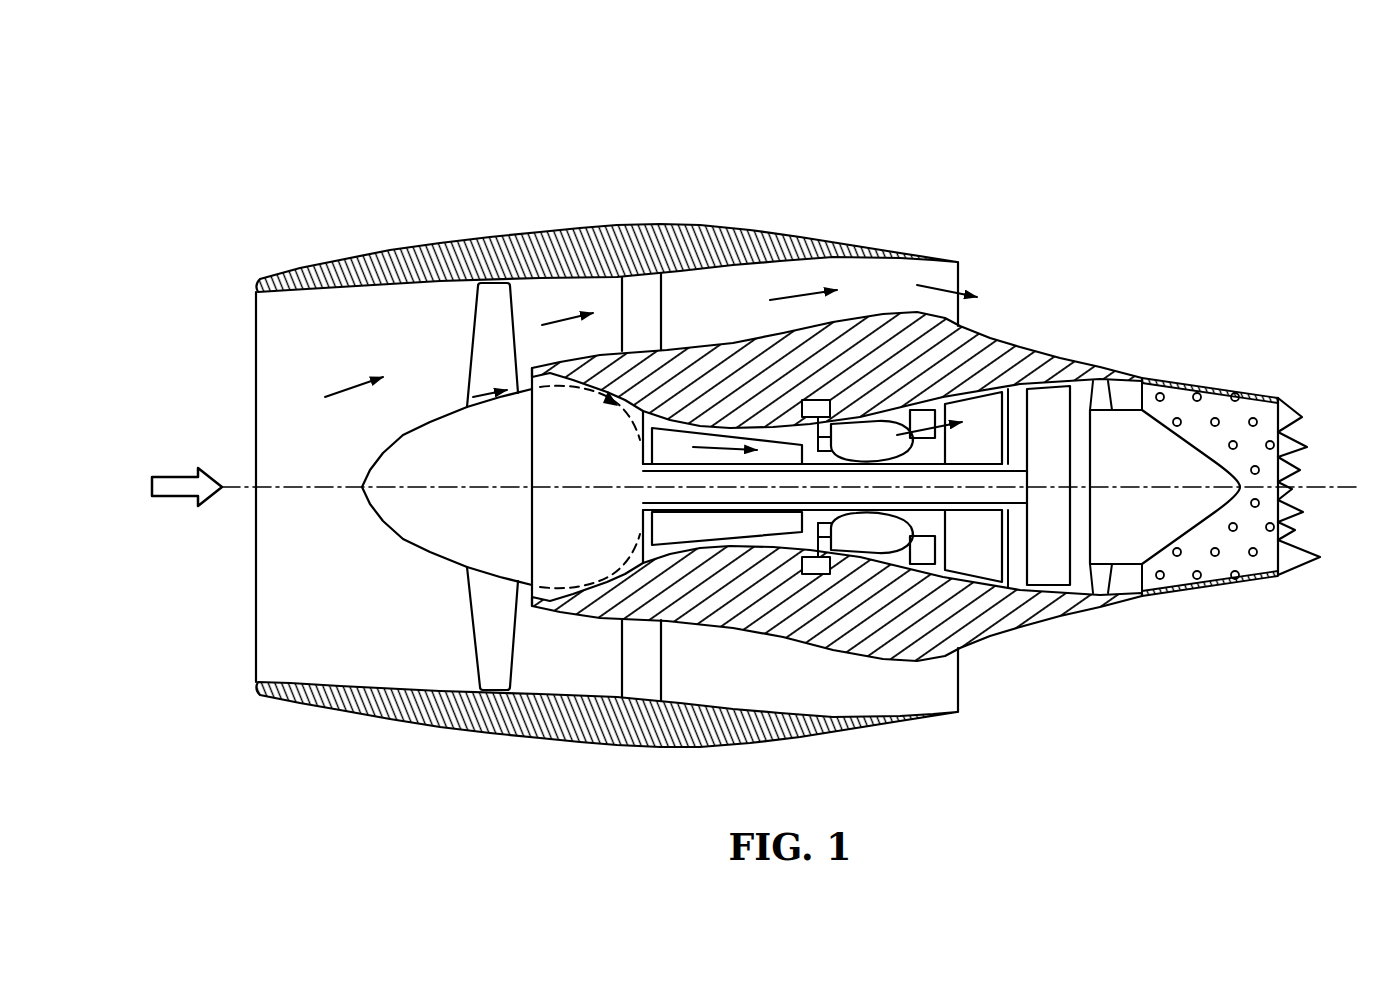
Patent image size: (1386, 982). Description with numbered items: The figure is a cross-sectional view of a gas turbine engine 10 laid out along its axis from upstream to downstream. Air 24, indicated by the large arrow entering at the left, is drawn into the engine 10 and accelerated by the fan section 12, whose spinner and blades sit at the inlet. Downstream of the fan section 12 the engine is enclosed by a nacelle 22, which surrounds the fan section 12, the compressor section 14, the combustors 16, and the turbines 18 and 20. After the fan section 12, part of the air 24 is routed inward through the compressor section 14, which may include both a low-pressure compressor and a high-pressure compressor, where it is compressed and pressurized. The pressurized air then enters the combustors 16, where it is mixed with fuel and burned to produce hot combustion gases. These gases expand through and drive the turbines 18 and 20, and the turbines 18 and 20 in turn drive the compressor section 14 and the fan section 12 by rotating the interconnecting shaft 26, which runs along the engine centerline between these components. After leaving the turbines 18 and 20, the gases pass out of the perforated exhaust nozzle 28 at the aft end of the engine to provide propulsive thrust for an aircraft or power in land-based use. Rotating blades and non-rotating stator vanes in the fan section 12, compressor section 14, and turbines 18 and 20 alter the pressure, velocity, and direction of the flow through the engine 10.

The gas turbine engine 10 is at (1042, 178).
The fan section 12 is at (395, 547).
The compressor section 14 is at (682, 442).
The combustors 16 is at (877, 437).
The turbine 18 is at (963, 550).
The turbine 20 is at (1085, 600).
The nacelle 22 is at (790, 233).
The air 24 is at (193, 498).
The interconnecting shaft 26 is at (1052, 560).
The exhaust nozzle 28 is at (1223, 387).